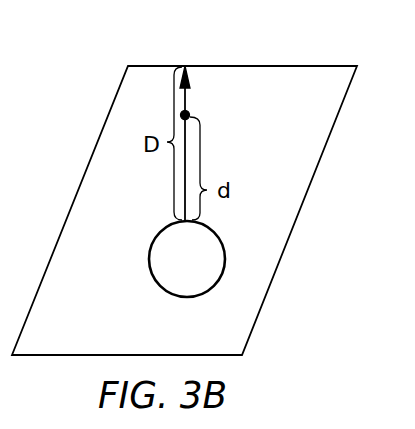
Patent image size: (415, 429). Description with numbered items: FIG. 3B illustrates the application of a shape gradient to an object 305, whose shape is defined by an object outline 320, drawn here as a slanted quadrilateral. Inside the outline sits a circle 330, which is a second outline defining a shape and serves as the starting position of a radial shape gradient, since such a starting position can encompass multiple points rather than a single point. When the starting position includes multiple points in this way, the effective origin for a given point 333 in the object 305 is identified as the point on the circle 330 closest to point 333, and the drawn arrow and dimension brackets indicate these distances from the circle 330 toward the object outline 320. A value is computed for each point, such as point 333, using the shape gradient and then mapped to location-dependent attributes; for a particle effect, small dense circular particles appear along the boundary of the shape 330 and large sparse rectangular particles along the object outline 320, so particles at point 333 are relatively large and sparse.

The object outline 320 is at (126, 65).
The point 333 is at (190, 112).
The second outline defining a shape 330 is at (150, 258).
The object 305 is at (327, 333).